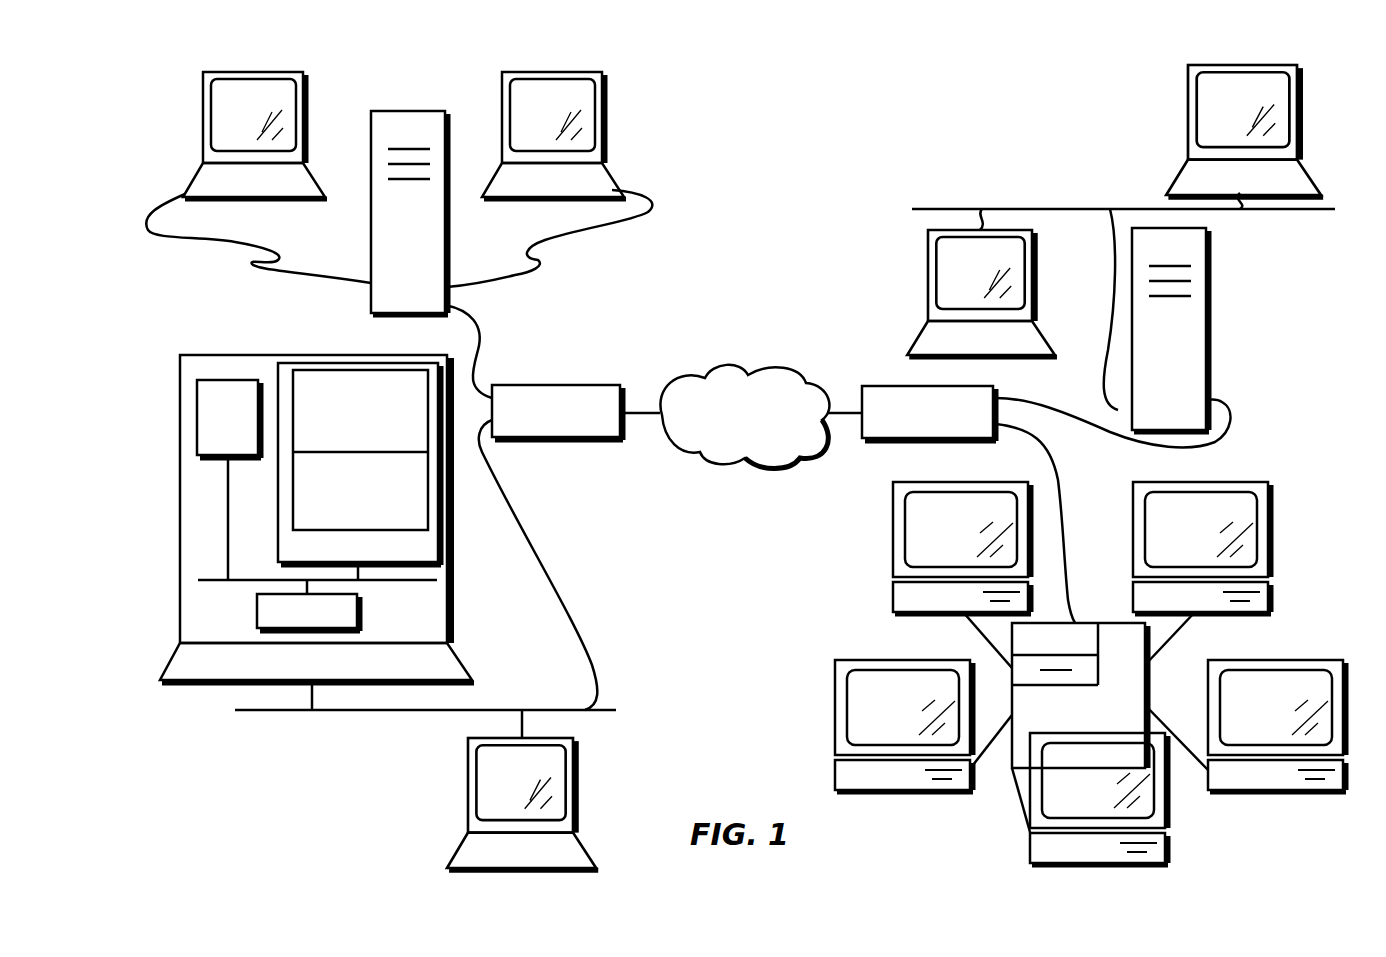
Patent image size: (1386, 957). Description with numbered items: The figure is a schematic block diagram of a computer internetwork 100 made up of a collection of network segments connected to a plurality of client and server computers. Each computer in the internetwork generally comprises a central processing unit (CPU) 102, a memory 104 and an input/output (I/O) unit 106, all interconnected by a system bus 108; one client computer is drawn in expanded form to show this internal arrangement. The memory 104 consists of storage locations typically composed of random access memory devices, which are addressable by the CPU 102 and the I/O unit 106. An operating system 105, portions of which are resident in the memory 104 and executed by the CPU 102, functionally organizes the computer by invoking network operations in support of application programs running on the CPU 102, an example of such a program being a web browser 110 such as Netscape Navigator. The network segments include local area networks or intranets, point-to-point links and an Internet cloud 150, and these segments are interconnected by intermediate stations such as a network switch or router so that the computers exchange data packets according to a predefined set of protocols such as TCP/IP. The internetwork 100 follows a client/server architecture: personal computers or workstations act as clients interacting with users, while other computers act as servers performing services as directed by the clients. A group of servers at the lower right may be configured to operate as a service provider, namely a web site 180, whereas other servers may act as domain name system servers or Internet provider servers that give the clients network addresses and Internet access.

The computer internetwork 100 is at (172, 120).
The central processing unit 102 is at (212, 439).
The memory 104 is at (359, 464).
The operating system 105 is at (344, 526).
The input/output unit 106 is at (346, 622).
The system bus 108 is at (210, 582).
The web browser 110 is at (344, 445).
The Internet cloud 150 is at (729, 448).
The web site 180 is at (938, 852).